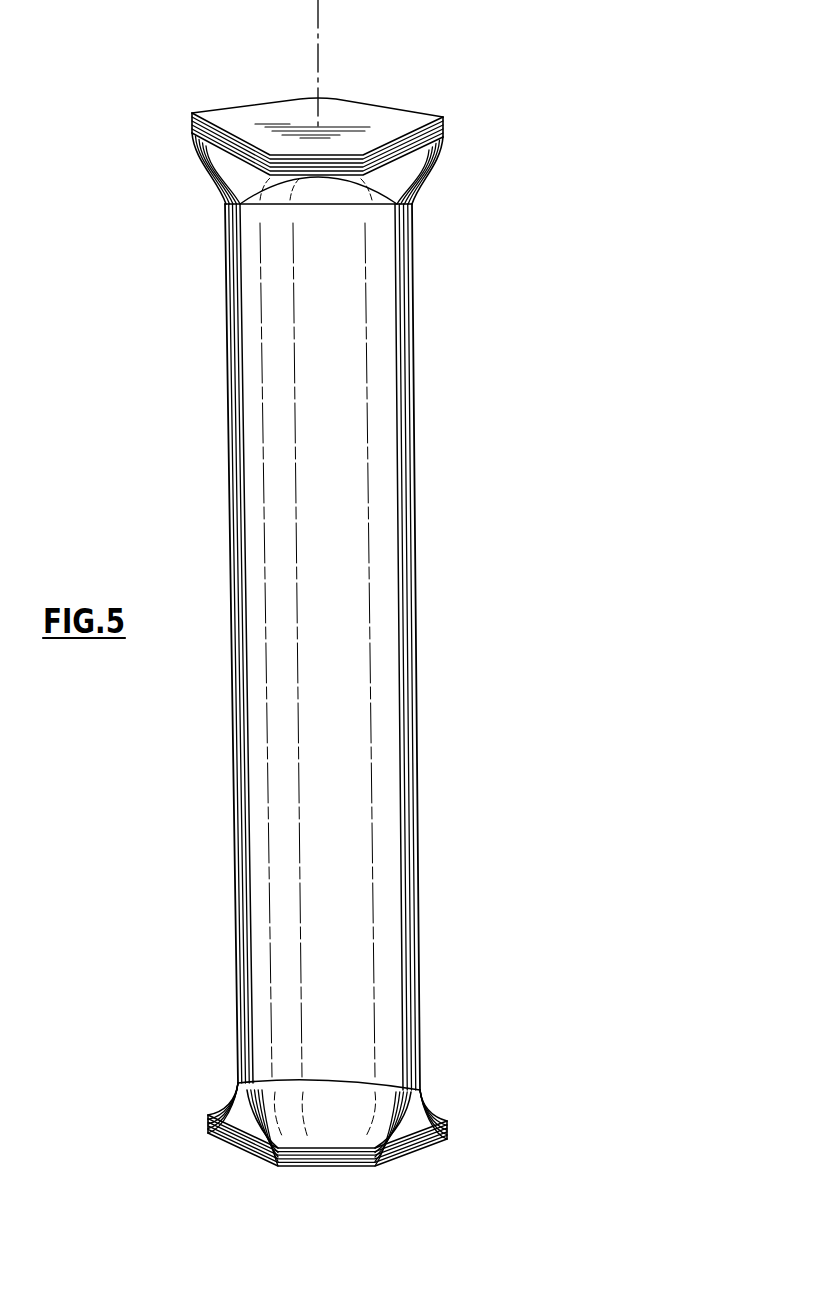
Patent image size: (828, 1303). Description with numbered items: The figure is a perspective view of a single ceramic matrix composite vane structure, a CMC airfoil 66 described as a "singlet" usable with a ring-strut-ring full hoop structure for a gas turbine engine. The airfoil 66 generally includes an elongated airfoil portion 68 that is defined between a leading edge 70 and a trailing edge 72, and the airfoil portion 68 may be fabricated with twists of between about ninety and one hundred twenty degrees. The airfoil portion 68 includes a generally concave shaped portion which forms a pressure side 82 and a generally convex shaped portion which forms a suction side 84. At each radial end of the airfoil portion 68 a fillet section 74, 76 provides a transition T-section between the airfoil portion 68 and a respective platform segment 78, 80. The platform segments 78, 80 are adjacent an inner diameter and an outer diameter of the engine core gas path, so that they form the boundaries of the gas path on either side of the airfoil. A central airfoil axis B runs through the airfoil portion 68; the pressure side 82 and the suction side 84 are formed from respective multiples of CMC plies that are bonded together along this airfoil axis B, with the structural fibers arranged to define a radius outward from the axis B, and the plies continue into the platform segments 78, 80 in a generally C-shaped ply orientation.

The CMC airfoil 66 is at (616, 466).
The airfoil portion 68 is at (375, 488).
The leading edge 70 is at (232, 533).
The trailing edge 72 is at (413, 650).
The fillet section 74 is at (427, 1113).
The fillet section 76 is at (410, 172).
The platform segment 78 is at (406, 1180).
The platform segment 80 is at (455, 94).
The pressure side 82 is at (385, 880).
The suction side 84 is at (233, 750).
The airfoil axis B is at (318, 43).